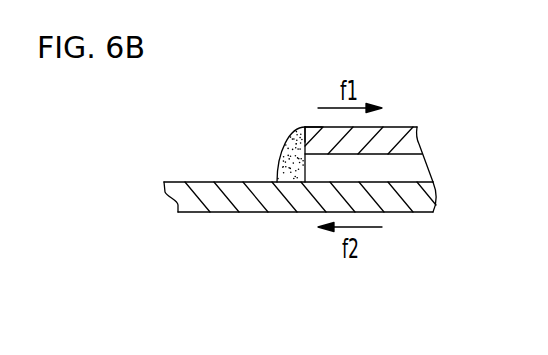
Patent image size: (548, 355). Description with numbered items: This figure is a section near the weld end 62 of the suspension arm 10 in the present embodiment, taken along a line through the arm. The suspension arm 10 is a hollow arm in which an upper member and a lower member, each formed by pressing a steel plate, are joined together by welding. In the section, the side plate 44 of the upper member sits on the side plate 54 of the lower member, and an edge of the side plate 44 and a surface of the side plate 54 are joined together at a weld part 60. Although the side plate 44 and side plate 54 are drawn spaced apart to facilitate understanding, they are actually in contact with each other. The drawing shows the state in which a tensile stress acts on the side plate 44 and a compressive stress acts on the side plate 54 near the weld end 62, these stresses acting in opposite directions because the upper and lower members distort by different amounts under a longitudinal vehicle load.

The suspension arm 10 is at (323, 327).
The side plate 44 is at (400, 126).
The side plate 54 is at (402, 213).
The weld part 60 is at (283, 155).
The weld end 62 is at (304, 125).